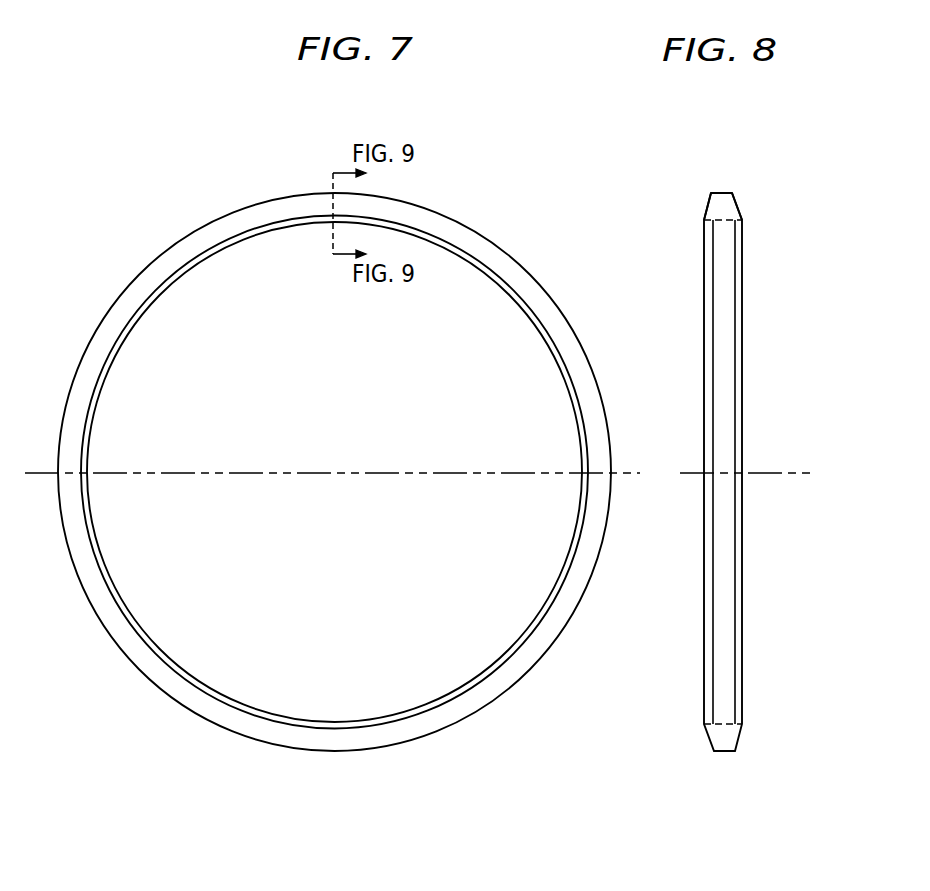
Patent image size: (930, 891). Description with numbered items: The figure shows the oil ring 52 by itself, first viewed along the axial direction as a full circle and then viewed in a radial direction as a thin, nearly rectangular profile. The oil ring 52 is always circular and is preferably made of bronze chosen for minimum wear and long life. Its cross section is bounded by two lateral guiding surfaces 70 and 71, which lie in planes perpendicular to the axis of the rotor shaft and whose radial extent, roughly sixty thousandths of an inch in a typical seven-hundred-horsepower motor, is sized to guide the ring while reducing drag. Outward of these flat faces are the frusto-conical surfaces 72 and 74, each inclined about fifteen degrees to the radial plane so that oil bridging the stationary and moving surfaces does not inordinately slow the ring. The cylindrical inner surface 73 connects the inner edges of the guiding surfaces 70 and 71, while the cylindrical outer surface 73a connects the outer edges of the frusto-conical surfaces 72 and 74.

In FIG. 7, the oil ring 52 is at (452, 217).
In FIG. 8, the oil ring 52 is at (743, 329).
In FIG. 8, the lateral guiding surface 70 is at (703, 222).
In FIG. 7, the lateral guiding surface 71 is at (500, 292).
In FIG. 8, the lateral guiding surface 71 is at (742, 222).
In FIG. 8, the frusto-conical surface 72 is at (708, 217).
In FIG. 7, the inner surface 73 is at (568, 395).
In FIG. 7, the outer surface 73a is at (560, 313).
In FIG. 8, the outer surface 73a is at (725, 752).
In FIG. 8, the frusto-conical surface 74 is at (740, 216).